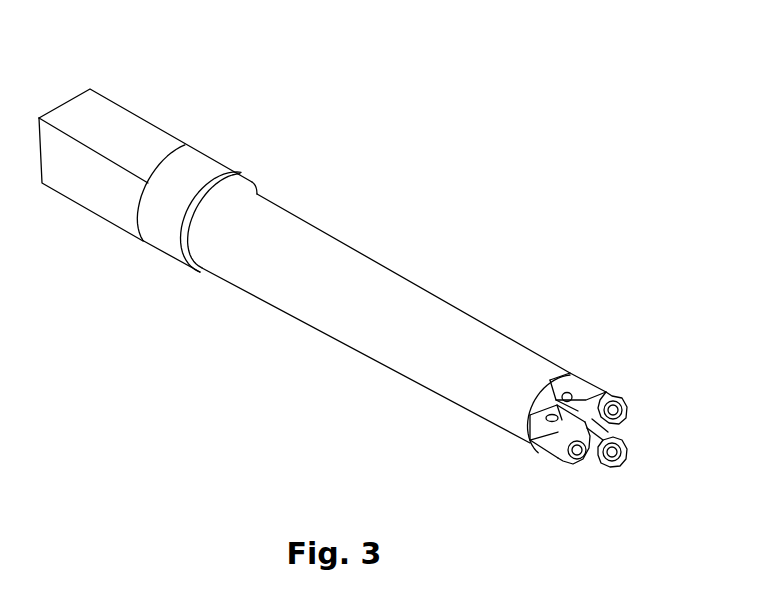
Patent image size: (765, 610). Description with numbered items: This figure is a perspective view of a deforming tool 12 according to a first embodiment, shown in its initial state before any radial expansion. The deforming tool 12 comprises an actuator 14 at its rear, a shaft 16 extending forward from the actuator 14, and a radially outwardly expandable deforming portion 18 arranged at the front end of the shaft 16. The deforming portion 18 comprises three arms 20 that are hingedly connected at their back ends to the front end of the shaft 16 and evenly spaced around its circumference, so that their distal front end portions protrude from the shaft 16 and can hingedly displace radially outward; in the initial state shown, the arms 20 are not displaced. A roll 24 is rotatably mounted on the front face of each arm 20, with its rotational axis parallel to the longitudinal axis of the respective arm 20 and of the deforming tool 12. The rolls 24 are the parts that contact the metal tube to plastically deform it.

The deforming tool 12 is at (482, 190).
The actuator 14 is at (132, 120).
The shaft 16 is at (345, 220).
The radially outwardly expandable deforming portion 18 is at (588, 352).
The arm 20 is at (593, 384).
The roll 24 is at (597, 463).